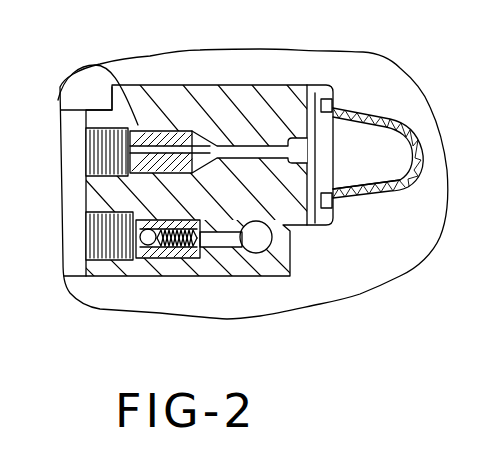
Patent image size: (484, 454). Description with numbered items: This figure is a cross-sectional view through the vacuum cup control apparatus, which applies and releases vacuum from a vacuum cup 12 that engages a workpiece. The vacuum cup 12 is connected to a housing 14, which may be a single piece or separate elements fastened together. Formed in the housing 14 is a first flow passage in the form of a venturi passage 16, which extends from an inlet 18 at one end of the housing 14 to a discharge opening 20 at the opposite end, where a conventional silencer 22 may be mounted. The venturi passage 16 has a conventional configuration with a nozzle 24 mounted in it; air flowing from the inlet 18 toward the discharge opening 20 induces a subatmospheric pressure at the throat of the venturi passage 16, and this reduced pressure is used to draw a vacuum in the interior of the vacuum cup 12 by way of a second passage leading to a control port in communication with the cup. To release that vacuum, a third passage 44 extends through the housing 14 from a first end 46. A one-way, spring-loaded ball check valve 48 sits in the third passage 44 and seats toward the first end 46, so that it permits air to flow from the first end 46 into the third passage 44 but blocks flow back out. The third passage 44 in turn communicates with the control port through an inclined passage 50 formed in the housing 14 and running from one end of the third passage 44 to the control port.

The vacuum cup 12 is at (340, 33).
The housing 14 is at (170, 86).
The venturi passage 16 is at (270, 145).
The inlet 18 is at (60, 87).
The discharge opening 20 is at (350, 117).
The silencer 22 is at (402, 190).
The nozzle 24 is at (112, 88).
The third passage 44 is at (225, 240).
The first end 46 is at (108, 247).
The ball check valve 48 is at (167, 258).
The inclined passage 50 is at (270, 247).